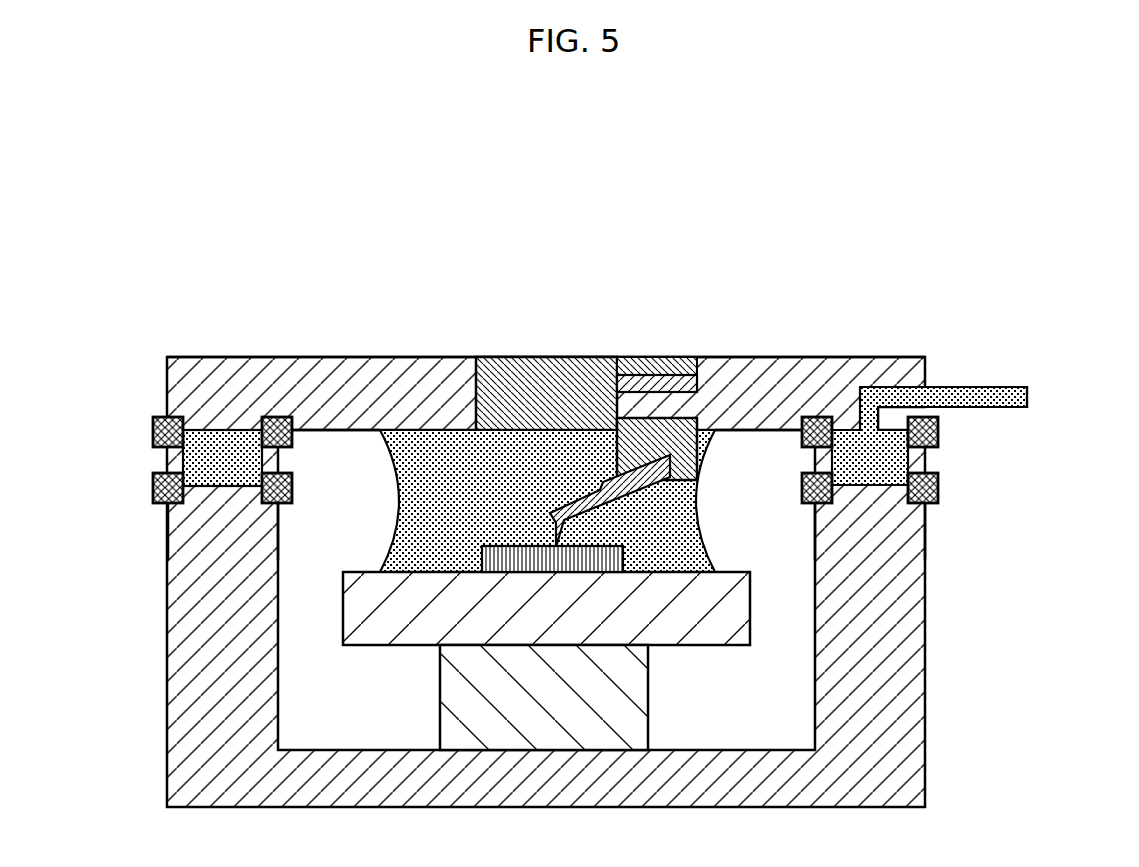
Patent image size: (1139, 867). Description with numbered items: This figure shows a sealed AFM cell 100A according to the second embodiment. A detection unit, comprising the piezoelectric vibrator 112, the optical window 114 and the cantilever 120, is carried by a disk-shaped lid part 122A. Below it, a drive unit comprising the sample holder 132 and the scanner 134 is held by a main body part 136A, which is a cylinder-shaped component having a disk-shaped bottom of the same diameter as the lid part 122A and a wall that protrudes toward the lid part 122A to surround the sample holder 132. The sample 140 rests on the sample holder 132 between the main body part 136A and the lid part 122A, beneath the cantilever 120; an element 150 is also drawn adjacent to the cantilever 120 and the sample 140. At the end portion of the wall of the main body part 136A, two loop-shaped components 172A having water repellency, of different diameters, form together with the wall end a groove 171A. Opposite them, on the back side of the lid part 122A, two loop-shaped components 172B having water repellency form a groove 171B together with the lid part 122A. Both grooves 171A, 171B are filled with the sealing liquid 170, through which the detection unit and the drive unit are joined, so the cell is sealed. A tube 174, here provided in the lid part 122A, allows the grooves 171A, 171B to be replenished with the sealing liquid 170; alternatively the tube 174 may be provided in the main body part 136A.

The sealed AFM cell 100A is at (987, 255).
The piezoelectric vibrator 112 is at (695, 380).
The optical window 114 is at (575, 357).
The cantilever 120 is at (697, 518).
The lid part 122A is at (790, 370).
The sample holder 132 is at (700, 623).
The scanner 134 is at (625, 697).
The main body part 136A is at (190, 672).
The sample 140 is at (482, 553).
The connection member 150 is at (705, 543).
The sealing liquid 170 is at (243, 460).
The groove 171A is at (213, 480).
The groove 171B is at (213, 435).
The components having water repellency 172A is at (258, 490).
The components having water repellency 172B is at (255, 422).
The tube 174 is at (988, 388).